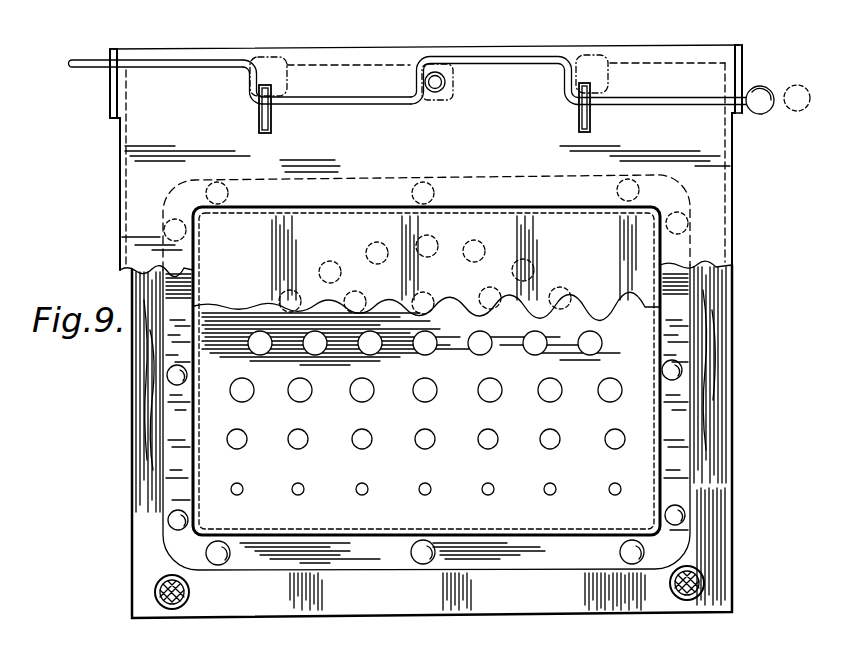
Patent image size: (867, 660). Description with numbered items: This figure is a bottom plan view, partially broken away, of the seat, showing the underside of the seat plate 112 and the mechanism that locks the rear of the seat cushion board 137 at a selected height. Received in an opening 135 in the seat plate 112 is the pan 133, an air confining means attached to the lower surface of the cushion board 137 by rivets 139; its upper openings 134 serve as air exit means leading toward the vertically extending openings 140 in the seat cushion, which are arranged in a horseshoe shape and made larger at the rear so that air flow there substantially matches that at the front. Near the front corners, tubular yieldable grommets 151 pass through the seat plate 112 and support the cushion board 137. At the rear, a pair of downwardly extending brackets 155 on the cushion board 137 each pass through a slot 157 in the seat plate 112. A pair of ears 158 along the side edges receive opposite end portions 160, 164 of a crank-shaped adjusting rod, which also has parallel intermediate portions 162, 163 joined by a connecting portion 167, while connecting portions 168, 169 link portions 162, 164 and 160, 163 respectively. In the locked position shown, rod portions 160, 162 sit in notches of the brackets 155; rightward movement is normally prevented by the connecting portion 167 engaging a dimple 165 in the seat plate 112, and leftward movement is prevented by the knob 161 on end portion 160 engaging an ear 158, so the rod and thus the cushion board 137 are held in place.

The seat plate 112 is at (659, 56).
The pan 133 is at (387, 198).
The upper openings 134 is at (370, 343).
The opening 135 is at (292, 208).
The seat cushion board 137 is at (134, 406).
The rivets 139 is at (167, 376).
The vertically extending openings 140 is at (536, 258).
The tubular yieldable grommet 151 is at (177, 604).
The brackets 155 is at (270, 119).
The slot 157 is at (259, 112).
The ears 158 is at (110, 73).
The end portion 160 is at (680, 92).
The knob 161 is at (777, 81).
The intermediate portion 162 is at (365, 105).
The offset portion 163 is at (458, 62).
The end portion 164 is at (184, 62).
The dimple 165 is at (438, 94).
The connecting portion 167 is at (416, 86).
The connecting portion 168 is at (248, 82).
The connecting portion 169 is at (565, 84).